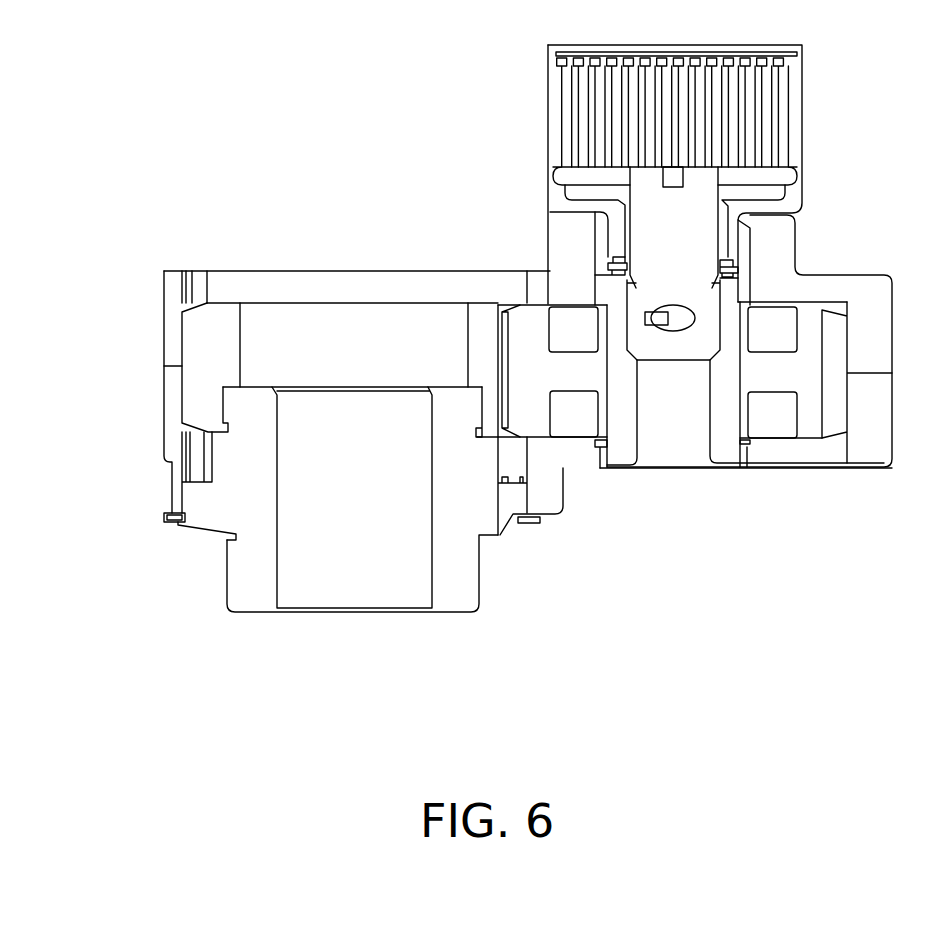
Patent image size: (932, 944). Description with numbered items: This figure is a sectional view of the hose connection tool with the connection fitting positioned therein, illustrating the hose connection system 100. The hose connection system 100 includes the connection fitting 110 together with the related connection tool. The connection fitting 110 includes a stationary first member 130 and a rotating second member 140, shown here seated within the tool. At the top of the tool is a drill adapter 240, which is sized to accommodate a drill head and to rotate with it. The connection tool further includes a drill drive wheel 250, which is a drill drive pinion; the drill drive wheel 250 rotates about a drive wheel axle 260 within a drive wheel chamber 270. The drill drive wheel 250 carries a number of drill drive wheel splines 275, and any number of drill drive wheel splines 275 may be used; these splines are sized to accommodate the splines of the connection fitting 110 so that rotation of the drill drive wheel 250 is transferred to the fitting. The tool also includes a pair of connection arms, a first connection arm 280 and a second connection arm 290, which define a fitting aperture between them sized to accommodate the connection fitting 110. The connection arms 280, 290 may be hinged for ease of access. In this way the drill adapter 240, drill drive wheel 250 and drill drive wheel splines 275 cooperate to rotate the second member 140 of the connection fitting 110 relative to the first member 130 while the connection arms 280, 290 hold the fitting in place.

The hose connection system 100 is at (150, 92).
The connection fitting 110 is at (224, 555).
The first member 130 is at (227, 607).
The second member 140 is at (207, 360).
The drill adapter 240 is at (792, 101).
The drill drive wheel 250 is at (805, 322).
The drive wheel axle 260 is at (720, 461).
The drive wheel chamber 270 is at (833, 438).
The drill drive wheel splines 275 is at (500, 305).
The first connection arm 280 is at (177, 293).
The second connection arm 290 is at (174, 517).